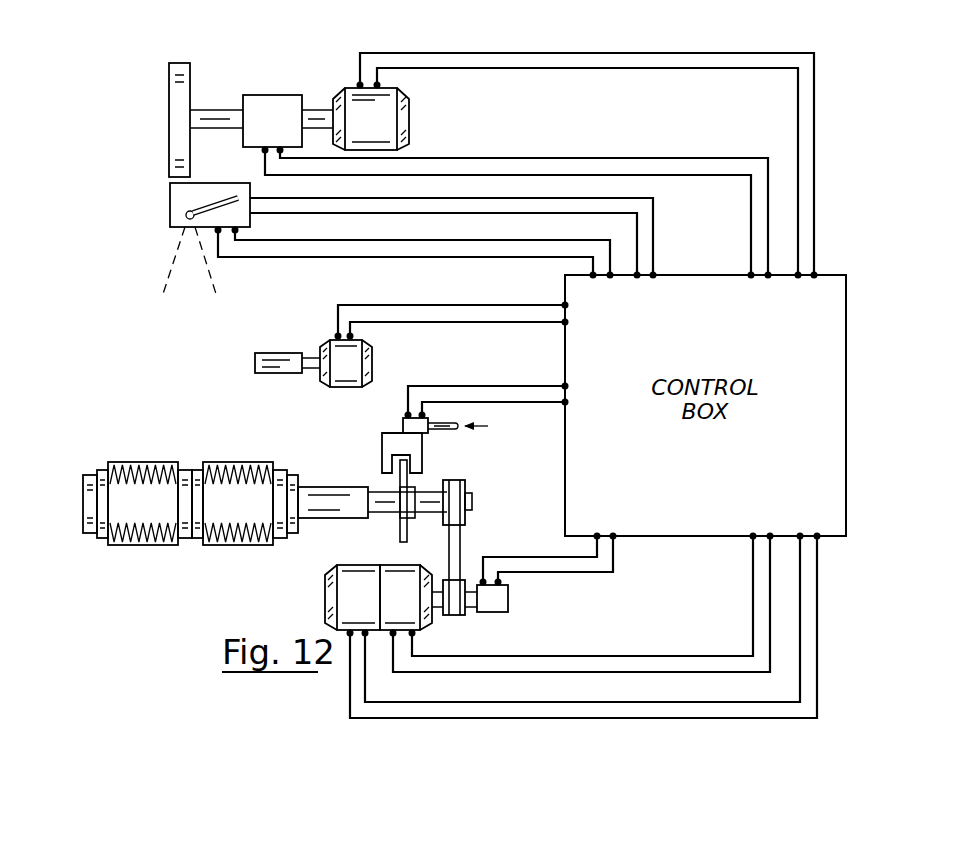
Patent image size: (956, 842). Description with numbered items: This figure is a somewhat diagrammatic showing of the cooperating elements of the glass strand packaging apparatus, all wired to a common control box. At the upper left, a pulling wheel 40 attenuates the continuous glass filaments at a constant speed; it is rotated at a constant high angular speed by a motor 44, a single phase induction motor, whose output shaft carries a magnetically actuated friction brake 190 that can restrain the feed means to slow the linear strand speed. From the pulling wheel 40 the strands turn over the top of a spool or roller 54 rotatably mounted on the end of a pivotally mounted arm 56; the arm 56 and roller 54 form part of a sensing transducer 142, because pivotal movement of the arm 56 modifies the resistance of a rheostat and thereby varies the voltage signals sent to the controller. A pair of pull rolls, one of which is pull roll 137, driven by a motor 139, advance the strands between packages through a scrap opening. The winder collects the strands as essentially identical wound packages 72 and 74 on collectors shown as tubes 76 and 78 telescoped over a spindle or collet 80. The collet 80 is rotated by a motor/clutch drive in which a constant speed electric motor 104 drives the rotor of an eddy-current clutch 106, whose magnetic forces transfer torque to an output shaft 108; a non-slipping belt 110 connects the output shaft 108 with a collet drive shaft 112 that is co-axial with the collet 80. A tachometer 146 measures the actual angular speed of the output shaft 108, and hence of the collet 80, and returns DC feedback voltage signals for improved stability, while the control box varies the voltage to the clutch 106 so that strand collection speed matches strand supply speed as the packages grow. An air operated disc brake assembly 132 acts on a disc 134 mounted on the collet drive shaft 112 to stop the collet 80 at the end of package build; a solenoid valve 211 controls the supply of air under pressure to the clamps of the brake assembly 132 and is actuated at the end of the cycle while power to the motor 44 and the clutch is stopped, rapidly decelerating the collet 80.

The pulling wheel 40 is at (180, 63).
The friction brake 190 is at (298, 92).
The motor 44 is at (409, 113).
The sensing transducer 142 is at (177, 225).
The arm 56 is at (220, 203).
The spool or roller 54 is at (187, 212).
The pull roll 137 is at (297, 333).
The motor 139 is at (372, 350).
The solenoid valve 211 is at (406, 416).
The disc brake assembly 132 is at (381, 437).
The disc 134 is at (400, 483).
The collet 80 is at (84, 484).
The tube 76 is at (102, 470).
The wound package 72 is at (158, 440).
The tube 78 is at (210, 432).
The wound package 74 is at (258, 440).
The collet drive shaft 112 is at (471, 497).
The belt 110 is at (463, 540).
The electric motor 104 is at (371, 609).
The eddy-current clutch 106 is at (414, 609).
The tachometer 146 is at (510, 598).
The output shaft 108 is at (438, 606).